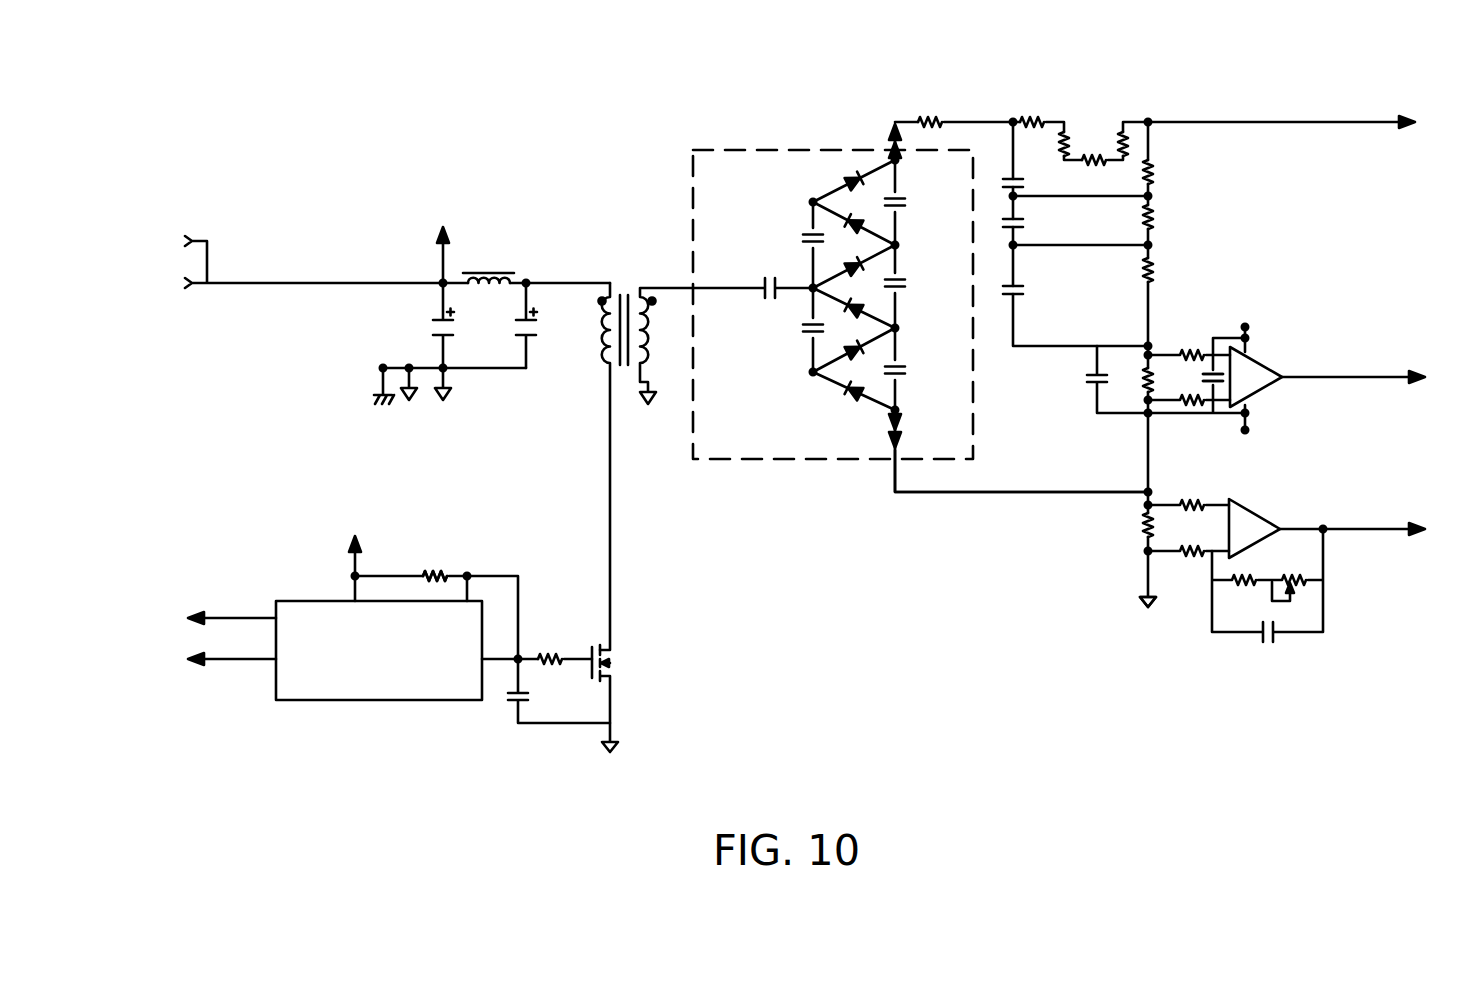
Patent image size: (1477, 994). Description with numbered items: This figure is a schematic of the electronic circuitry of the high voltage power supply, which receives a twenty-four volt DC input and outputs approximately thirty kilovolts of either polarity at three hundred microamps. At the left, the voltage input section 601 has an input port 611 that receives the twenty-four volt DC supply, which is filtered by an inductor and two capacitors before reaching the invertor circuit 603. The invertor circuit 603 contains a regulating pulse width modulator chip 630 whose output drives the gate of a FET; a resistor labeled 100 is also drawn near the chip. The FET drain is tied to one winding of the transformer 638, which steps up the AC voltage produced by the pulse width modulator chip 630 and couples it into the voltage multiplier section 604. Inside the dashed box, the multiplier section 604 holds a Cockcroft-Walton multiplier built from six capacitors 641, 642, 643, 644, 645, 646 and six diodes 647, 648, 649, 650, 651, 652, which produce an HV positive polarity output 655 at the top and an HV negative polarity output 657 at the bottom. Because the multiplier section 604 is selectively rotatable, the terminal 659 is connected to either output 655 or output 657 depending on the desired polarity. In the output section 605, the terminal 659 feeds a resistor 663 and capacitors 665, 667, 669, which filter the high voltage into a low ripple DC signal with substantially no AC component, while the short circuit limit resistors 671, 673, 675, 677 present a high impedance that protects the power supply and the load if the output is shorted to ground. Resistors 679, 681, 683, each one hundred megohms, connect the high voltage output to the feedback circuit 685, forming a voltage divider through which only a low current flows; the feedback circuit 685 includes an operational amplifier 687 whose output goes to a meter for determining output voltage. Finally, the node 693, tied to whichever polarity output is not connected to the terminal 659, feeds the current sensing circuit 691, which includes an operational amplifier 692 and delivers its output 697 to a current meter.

The resistor 100 is at (436, 574).
The voltage input section 601 is at (398, 190).
The invertor circuit 603 is at (375, 669).
The voltage multiplier section 604 is at (920, 340).
The output section 605 is at (1130, 355).
The input port 611 is at (243, 283).
The regulating pulse width modulator chip 630 is at (430, 702).
The transformer 638 is at (612, 283).
The capacitor 641 is at (762, 286).
The capacitor 642 is at (802, 240).
The capacitor 643 is at (803, 330).
The capacitor 644 is at (905, 372).
The capacitor 645 is at (905, 284).
The capacitor 646 is at (905, 204).
The diode 647 is at (852, 397).
The diode 648 is at (856, 354).
The diode 649 is at (824, 330).
The diode 650 is at (856, 268).
The diode 651 is at (856, 228).
The diode 652 is at (857, 186).
The HV positive polarity output 655 is at (899, 152).
The HV negative polarity output 657 is at (905, 418).
The terminal 659 is at (892, 121).
The resistor 663 is at (926, 118).
The capacitor 665 is at (1008, 178).
The capacitor 667 is at (1011, 246).
The capacitor 669 is at (1010, 298).
The short circuit limit resistor 671 is at (1048, 118).
The short circuit limit resistor 673 is at (1070, 142).
The short circuit limit resistor 675 is at (1096, 166).
The short circuit limit resistor 677 is at (1132, 135).
The resistor 679 is at (1158, 180).
The resistor 681 is at (1158, 224).
The resistor 683 is at (1158, 273).
The feedback circuit 685 is at (1304, 305).
The operational amplifier 687 is at (1242, 415).
The current sensing circuit 691 is at (1197, 588).
The operational amplifier 692 is at (1252, 527).
The node 693 is at (893, 484).
The output 697 is at (1380, 531).